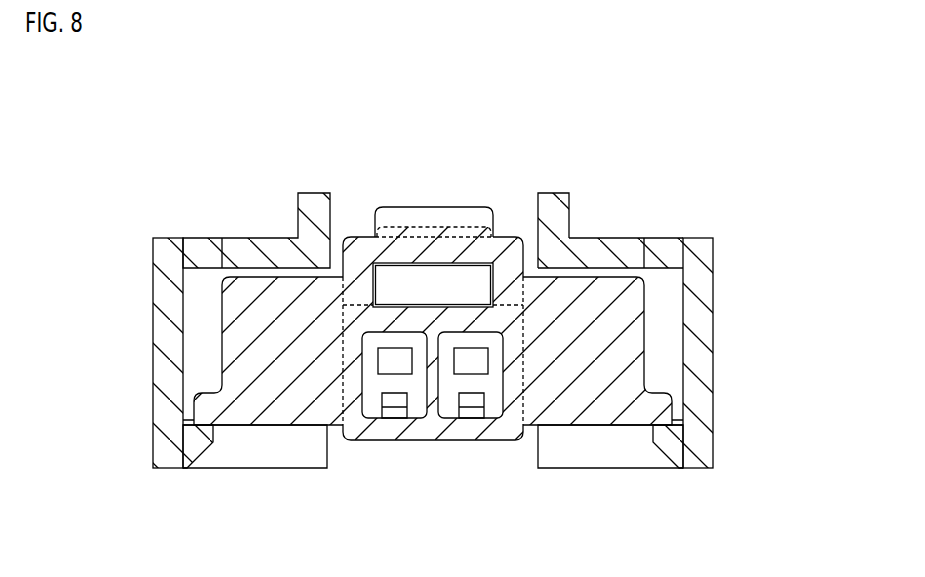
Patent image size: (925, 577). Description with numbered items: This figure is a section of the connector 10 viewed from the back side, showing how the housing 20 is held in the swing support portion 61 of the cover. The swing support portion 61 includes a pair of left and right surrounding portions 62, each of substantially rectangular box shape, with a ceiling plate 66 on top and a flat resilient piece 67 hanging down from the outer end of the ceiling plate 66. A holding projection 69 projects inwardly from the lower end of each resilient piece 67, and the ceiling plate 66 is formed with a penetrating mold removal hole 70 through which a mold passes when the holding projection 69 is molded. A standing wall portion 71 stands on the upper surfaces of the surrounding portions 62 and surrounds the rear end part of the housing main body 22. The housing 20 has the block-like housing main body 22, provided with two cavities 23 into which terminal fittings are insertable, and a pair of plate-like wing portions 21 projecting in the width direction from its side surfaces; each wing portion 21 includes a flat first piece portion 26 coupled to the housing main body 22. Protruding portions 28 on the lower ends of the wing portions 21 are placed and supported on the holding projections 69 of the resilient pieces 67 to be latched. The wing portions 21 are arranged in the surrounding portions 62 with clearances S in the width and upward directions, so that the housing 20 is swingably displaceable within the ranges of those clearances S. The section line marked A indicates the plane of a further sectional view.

The connector 10 is at (423, 107).
The housing 20 is at (438, 207).
The wing portion 21 is at (219, 370).
The housing main body 22 is at (480, 440).
The cavity 23 is at (394, 374).
The first piece portion 26 is at (312, 420).
The protruding portion 28 is at (183, 420).
The swing support portion 61 is at (698, 238).
The surrounding portion 62 is at (153, 355).
The ceiling plate 66 is at (273, 238).
The resilient piece 67 is at (168, 302).
The holding projection 69 is at (207, 442).
The mold removal hole 70 is at (183, 250).
The standing wall portion 71 is at (550, 194).
The clearance S is at (175, 410).
The section line A- A is at (267, 183).